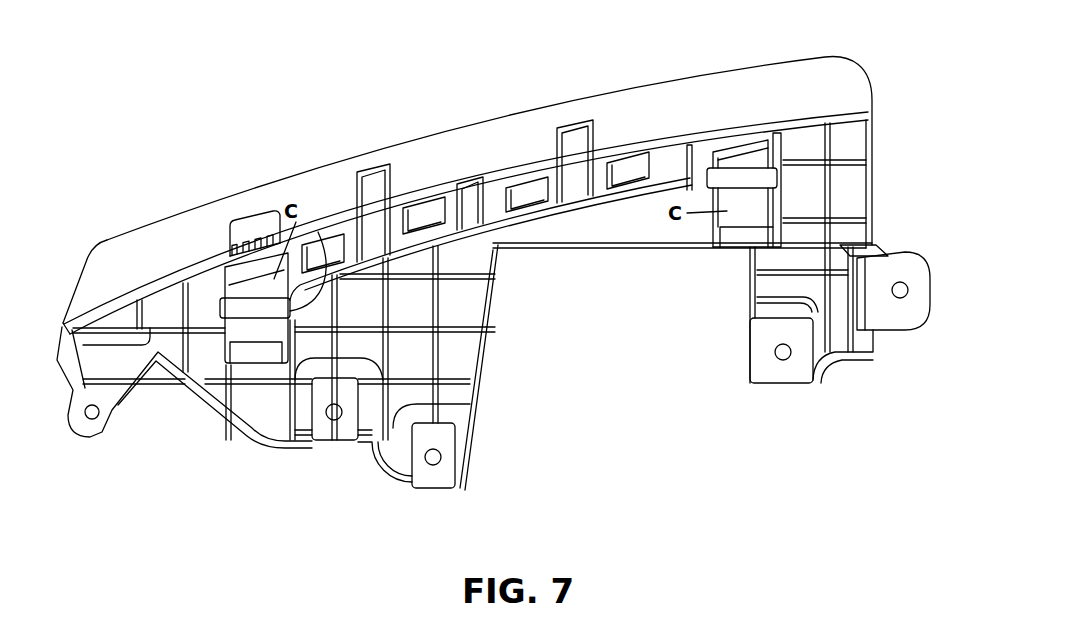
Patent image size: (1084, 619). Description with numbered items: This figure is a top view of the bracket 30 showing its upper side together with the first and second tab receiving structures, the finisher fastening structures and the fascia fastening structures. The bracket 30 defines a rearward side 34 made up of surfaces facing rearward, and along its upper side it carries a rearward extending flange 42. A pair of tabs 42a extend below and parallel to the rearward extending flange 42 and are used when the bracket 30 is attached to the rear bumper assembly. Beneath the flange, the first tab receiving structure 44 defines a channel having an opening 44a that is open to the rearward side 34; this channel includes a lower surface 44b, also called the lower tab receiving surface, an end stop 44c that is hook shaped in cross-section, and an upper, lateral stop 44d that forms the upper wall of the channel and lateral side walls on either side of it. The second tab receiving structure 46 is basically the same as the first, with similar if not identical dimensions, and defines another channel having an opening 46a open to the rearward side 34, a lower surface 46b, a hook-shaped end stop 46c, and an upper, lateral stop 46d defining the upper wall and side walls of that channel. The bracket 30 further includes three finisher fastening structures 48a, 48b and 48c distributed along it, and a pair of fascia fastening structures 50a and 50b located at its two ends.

The bracket 30 is at (266, 83).
The rearward side 34 is at (671, 78).
The rearward extending flange 42 is at (468, 157).
The tabs 42a is at (372, 190).
The first tab receiving structure 44 is at (214, 306).
The opening 44a is at (253, 267).
The lower surface 44b is at (242, 333).
The end stop 44c is at (258, 356).
The upper, lateral stop 44d is at (272, 281).
The second tab receiving structure 46 is at (791, 176).
The opening 46a is at (725, 156).
The lower surface 46b is at (746, 250).
The end stop 46c is at (732, 240).
The upper, lateral stop 46d is at (749, 177).
The finisher fastening structure 48a is at (334, 431).
The finisher fastening structure 48b is at (437, 473).
The finisher fastening structure 48c is at (777, 373).
The fascia fastening structure 50a is at (85, 428).
The fascia fastening structure 50b is at (910, 308).